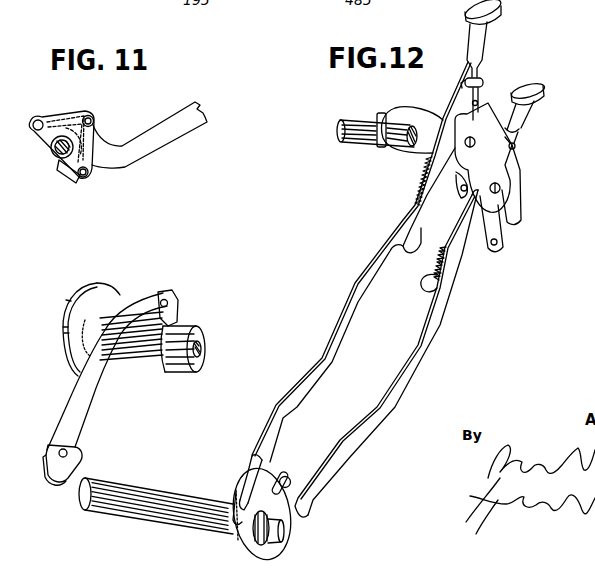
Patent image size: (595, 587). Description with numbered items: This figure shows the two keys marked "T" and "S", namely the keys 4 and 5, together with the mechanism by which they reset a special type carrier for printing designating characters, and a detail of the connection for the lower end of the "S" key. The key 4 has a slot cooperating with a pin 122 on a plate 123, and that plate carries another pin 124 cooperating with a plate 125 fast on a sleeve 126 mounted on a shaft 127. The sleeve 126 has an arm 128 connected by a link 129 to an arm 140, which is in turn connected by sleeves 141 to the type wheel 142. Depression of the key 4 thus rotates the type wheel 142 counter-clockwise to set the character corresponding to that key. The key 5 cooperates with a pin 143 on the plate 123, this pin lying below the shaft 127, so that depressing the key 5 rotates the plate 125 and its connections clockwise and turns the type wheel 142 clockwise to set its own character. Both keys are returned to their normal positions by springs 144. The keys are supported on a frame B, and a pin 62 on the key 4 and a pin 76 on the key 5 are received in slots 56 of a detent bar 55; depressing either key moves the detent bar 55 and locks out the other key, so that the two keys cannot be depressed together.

In FIG. 12, the key 4 is at (362, 268).
In FIG. 11, the key 5 is at (158, 143).
In FIG. 12, the key 5 is at (430, 338).
In FIG. 12, the detent bar 55 is at (514, 197).
In FIG. 12, the slots 56 is at (476, 103).
In FIG. 12, the pin 62 is at (484, 83).
In FIG. 12, the pin 76 is at (515, 146).
In FIG. 12, the frame B is at (488, 169).
In FIG. 11, the pin 122 is at (49, 106).
In FIG. 12, the pin 122 is at (234, 494).
In FIG. 11, the plate 123 is at (64, 118).
In FIG. 12, the plate 123 is at (254, 452).
In FIG. 11, the pin 124 is at (95, 118).
In FIG. 12, the pin 124 is at (286, 476).
In FIG. 12, the plate 125 is at (243, 537).
In FIG. 11, the sleeve 126 is at (50, 150).
In FIG. 12, the sleeve 126 is at (175, 521).
In FIG. 11, the shaft 127 is at (58, 165).
In FIG. 12, the shaft 127 is at (284, 533).
In FIG. 12, the arm 128 is at (78, 461).
In FIG. 12, the link 129 is at (150, 285).
In FIG. 12, the arm 140 is at (170, 313).
In FIG. 12, the sleeves 141 is at (141, 356).
In FIG. 12, the type wheel 142 is at (73, 315).
In FIG. 11, the pin 143 is at (90, 173).
In FIG. 12, the springs 144 is at (423, 172).